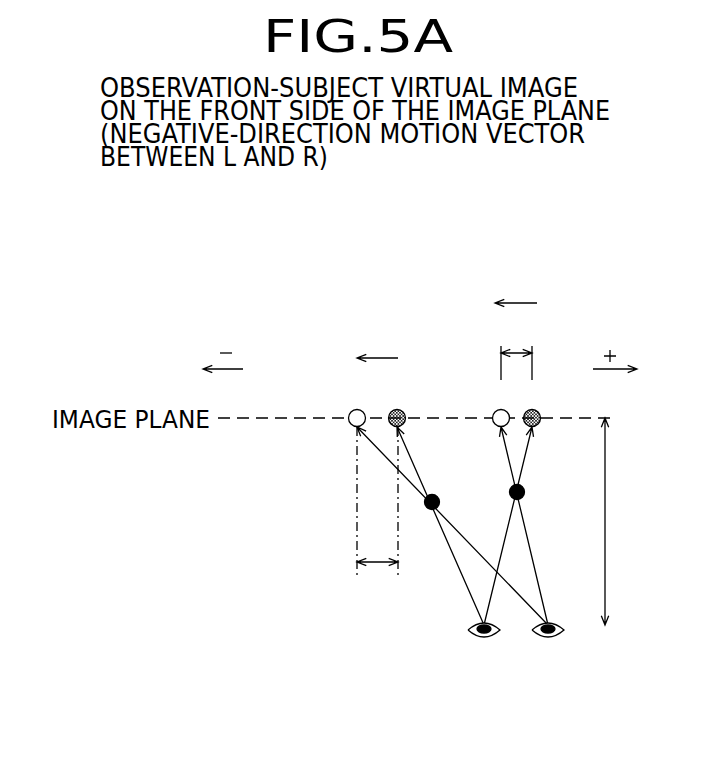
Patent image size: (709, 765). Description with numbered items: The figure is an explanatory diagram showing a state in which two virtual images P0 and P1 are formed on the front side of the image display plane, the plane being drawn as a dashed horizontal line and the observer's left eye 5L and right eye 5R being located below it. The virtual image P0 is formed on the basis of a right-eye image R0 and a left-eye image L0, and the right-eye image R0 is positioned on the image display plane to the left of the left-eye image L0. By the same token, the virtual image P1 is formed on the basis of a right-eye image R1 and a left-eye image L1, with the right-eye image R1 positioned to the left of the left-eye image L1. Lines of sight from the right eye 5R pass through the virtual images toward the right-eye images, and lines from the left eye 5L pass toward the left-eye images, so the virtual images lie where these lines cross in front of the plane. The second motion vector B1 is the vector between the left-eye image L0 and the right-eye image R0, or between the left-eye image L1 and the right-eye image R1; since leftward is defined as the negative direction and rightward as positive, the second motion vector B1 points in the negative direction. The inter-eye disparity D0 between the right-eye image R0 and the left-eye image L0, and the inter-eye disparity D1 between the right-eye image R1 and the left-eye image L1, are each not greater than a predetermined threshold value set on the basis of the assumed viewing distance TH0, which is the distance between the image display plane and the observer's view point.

The left eye 5L is at (469, 630).
The right eye 5R is at (563, 630).
The right-eye image R1 is at (360, 404).
The left-eye image L1 is at (397, 404).
The right-eye image R0 is at (501, 410).
The left-eye image L0 is at (532, 410).
The virtual image P0 is at (501, 490).
The virtual image P1 is at (422, 519).
The second motion vector B1 is at (447, 317).
The inter-eye disparity D0 is at (518, 349).
The inter-eye disparity D1 is at (377, 509).
The assumed viewing distance TH0 is at (629, 521).